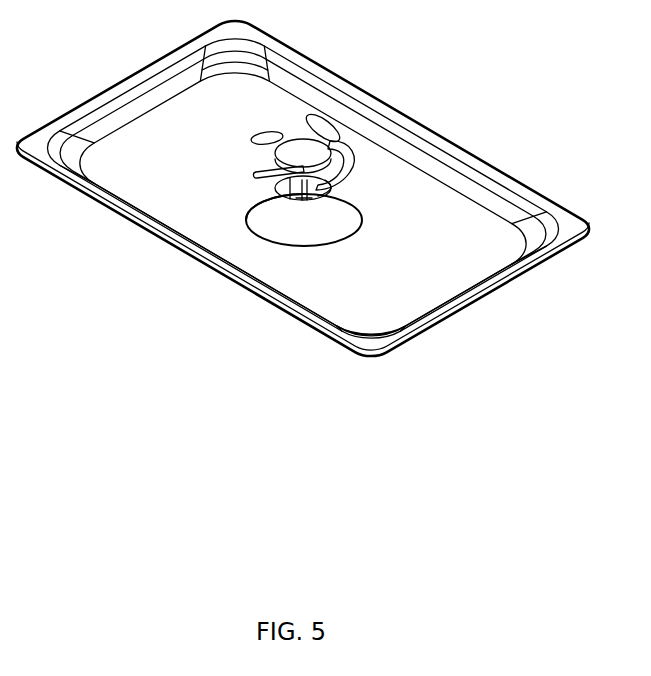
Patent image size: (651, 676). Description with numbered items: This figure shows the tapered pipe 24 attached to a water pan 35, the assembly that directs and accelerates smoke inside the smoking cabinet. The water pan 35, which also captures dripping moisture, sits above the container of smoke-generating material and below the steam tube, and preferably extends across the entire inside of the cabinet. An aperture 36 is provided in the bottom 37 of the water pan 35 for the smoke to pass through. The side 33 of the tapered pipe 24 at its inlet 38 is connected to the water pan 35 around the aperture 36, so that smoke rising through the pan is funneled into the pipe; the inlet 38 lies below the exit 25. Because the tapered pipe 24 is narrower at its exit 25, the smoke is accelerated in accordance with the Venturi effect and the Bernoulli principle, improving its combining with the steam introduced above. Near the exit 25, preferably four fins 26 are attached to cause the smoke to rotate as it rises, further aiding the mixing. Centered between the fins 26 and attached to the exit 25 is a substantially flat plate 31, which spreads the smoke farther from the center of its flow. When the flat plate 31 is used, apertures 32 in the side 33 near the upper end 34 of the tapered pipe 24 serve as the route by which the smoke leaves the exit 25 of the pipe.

The tapered pipe 24 is at (267, 202).
The exit 25 is at (320, 203).
The fins 26 is at (304, 116).
The flat plate 31 is at (318, 148).
The apertures 32 is at (287, 190).
The side 33 is at (305, 202).
The upper end 34 is at (345, 193).
The water pan 35 is at (130, 95).
The aperture 36 is at (258, 235).
The bottom 37 is at (212, 223).
The inlet 38 is at (247, 213).